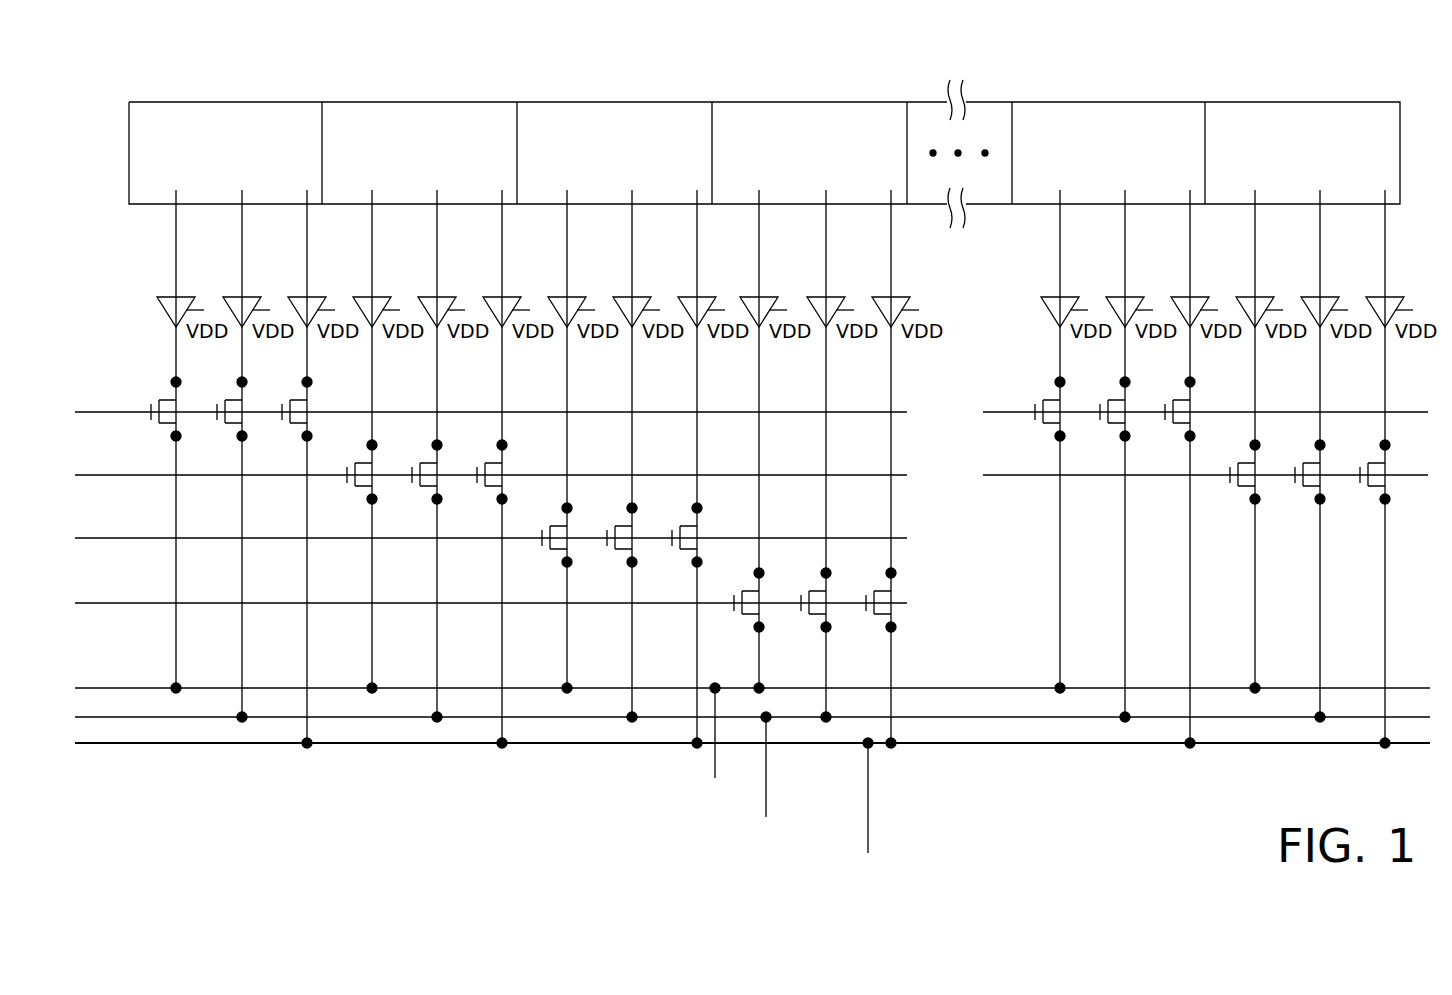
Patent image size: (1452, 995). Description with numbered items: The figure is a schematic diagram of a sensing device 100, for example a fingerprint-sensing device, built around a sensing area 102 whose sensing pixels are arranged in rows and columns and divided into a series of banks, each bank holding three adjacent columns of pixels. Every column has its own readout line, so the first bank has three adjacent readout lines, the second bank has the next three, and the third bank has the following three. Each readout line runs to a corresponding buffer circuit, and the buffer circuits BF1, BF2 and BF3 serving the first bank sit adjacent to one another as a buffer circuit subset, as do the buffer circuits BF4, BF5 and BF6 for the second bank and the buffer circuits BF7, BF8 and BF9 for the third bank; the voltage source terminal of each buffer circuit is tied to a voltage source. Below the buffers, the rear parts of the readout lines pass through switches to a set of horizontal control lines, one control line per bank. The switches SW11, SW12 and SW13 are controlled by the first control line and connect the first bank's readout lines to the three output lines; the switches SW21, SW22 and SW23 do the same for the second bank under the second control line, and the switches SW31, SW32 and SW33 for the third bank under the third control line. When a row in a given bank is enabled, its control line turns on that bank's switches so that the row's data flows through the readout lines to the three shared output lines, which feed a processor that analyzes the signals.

The sensing device 100 is at (135, 43).
The sensing area 102 is at (124, 161).
The buffer circuit BF1 is at (192, 308).
The buffer circuit BF2 is at (258, 308).
The buffer circuit BF3 is at (323, 308).
The buffer circuit BF4 is at (388, 308).
The buffer circuit BF5 is at (453, 308).
The buffer circuit BF6 is at (518, 308).
The buffer circuit BF7 is at (583, 308).
The buffer circuit BF8 is at (648, 308).
The buffer circuit BF9 is at (713, 308).
The switch SW11 is at (180, 407).
The switch SW12 is at (246, 407).
The switch SW13 is at (311, 407).
The switch SW21 is at (376, 471).
The switch SW22 is at (441, 471).
The switch SW23 is at (506, 471).
The switch SW31 is at (571, 534).
The switch SW32 is at (636, 534).
The switch SW33 is at (701, 534).